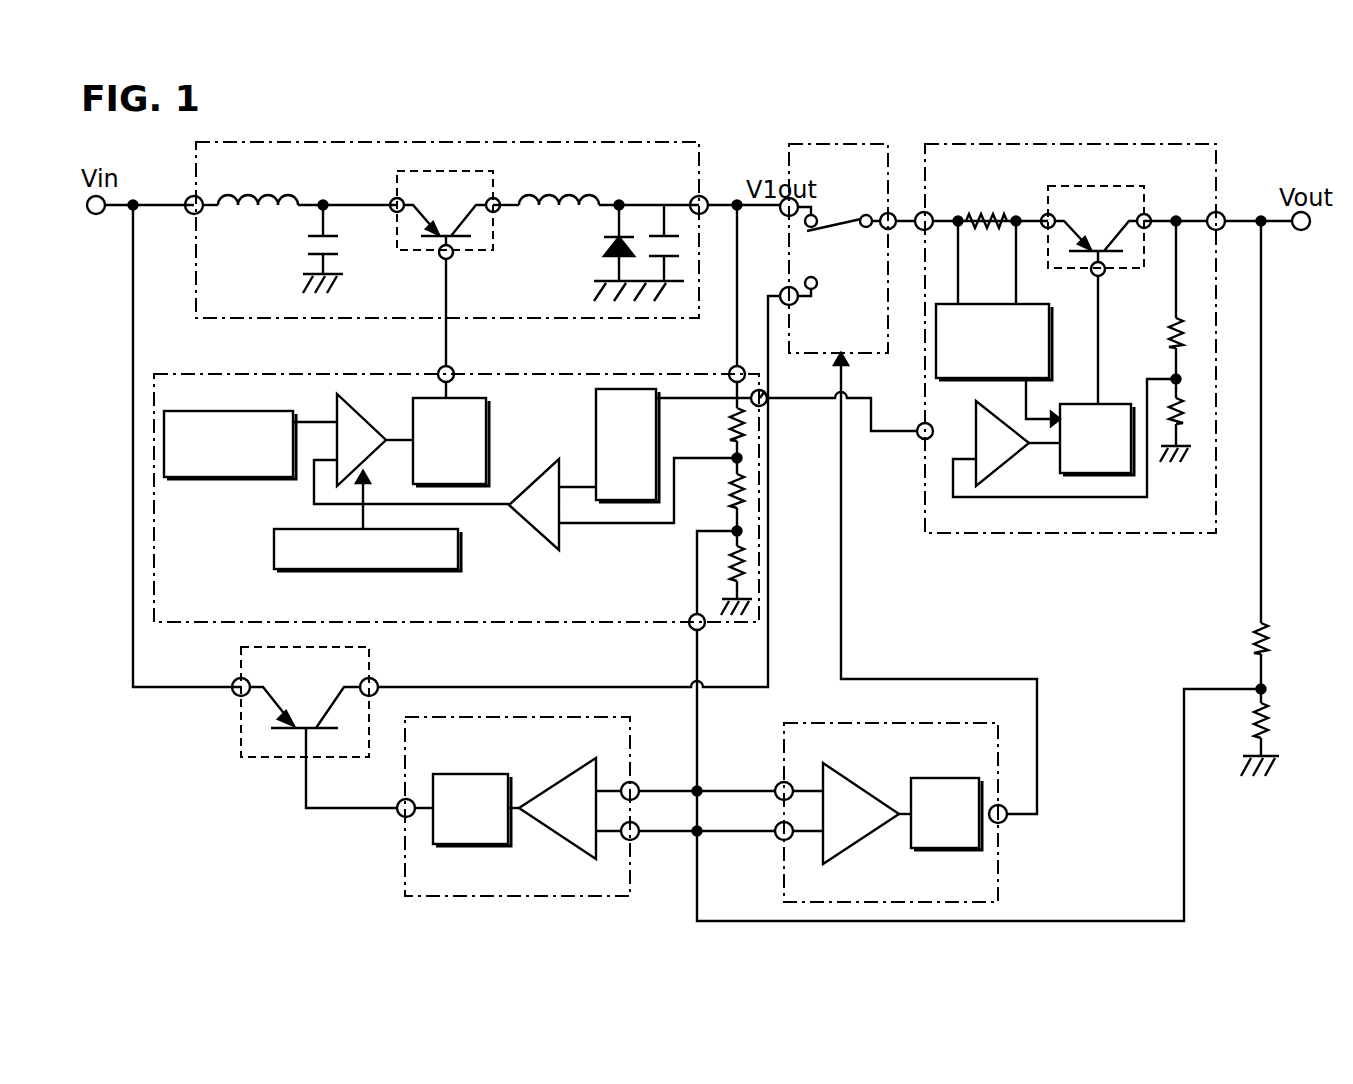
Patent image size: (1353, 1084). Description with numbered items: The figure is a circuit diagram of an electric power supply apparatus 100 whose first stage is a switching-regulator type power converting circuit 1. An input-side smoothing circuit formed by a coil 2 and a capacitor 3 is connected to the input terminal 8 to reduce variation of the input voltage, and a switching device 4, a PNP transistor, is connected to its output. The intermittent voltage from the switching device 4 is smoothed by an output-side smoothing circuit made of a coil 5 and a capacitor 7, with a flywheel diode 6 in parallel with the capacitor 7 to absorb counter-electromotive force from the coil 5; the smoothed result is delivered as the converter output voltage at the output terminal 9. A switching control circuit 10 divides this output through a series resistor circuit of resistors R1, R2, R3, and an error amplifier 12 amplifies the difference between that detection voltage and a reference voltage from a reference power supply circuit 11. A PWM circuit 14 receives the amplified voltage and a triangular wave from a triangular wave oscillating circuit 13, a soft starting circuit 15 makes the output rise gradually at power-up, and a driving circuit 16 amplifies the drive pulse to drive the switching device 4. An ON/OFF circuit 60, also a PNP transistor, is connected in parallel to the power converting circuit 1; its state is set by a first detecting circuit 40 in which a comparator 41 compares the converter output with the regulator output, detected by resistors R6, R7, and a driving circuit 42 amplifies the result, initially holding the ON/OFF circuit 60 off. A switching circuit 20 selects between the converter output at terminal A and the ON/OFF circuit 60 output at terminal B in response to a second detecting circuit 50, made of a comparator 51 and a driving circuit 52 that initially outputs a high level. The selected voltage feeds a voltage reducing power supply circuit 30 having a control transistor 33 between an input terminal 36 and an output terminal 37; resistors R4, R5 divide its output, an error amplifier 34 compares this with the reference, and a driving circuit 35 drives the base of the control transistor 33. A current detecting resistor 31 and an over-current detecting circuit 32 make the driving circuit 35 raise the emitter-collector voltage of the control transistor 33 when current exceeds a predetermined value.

The power converting circuit 1 is at (608, 140).
The coil 2 is at (240, 212).
The capacitor 3 is at (308, 240).
The switching device 4 is at (488, 252).
The coil 5 is at (538, 212).
The flywheel diode 6 is at (603, 248).
The capacitor 7 is at (655, 233).
The input terminal 8 is at (178, 195).
The output terminal 9 is at (702, 192).
The switching control circuit 10 is at (318, 372).
The reference power supply circuit 11 is at (593, 425).
The error amplifier 12 is at (528, 530).
The triangular wave oscillating circuit 13 is at (220, 478).
The PWM circuit 14 is at (360, 412).
The soft starting circuit 15 is at (395, 572).
The driving circuit 16 is at (487, 430).
The switching circuit 20 is at (826, 142).
The voltage reducing power supply circuit 30 is at (1146, 142).
The resistor 31 is at (985, 235).
The over-current detecting circuit 32 is at (1051, 322).
The control transistor 33 is at (1145, 185).
The error amplifier 34 is at (1012, 460).
The driving circuit 35 is at (1102, 402).
The input terminal 36 is at (917, 210).
The output terminal 37 is at (1220, 212).
The first detecting circuit 40 is at (402, 858).
The comparator 41 is at (555, 775).
The driving circuit 42 is at (468, 772).
The second detecting circuit 50 is at (1000, 878).
The comparator 51 is at (855, 780).
The driving circuit 52 is at (945, 777).
The ON/OFF circuit 60 is at (262, 758).
The electric power supply apparatus 100 is at (338, 130).
The resistor R1 is at (730, 437).
The resistor R2 is at (730, 503).
The resistor R3 is at (728, 570).
The resistor R4 is at (1170, 320).
The resistor R5 is at (1182, 418).
The resistor R6 is at (1255, 625).
The resistor R7 is at (1255, 730).